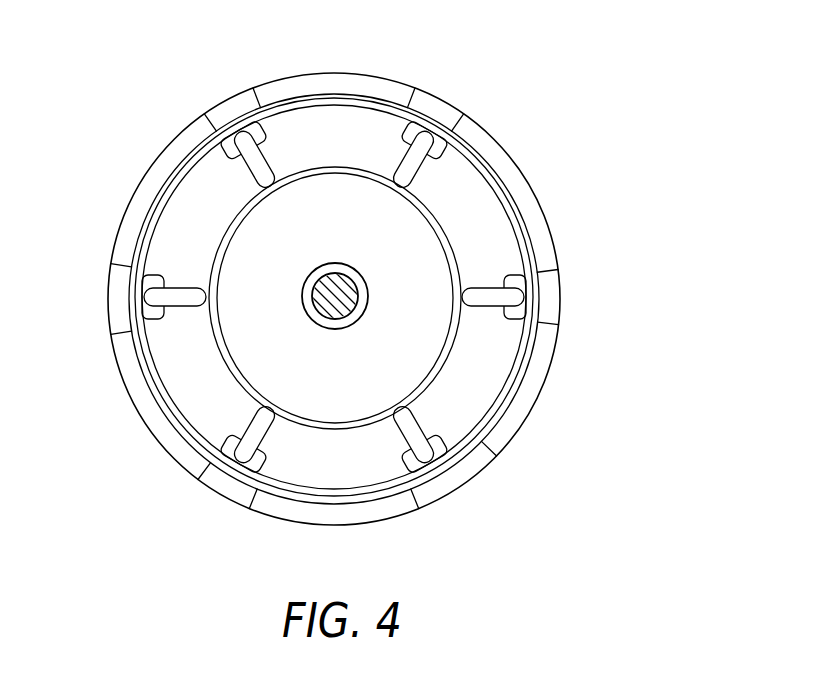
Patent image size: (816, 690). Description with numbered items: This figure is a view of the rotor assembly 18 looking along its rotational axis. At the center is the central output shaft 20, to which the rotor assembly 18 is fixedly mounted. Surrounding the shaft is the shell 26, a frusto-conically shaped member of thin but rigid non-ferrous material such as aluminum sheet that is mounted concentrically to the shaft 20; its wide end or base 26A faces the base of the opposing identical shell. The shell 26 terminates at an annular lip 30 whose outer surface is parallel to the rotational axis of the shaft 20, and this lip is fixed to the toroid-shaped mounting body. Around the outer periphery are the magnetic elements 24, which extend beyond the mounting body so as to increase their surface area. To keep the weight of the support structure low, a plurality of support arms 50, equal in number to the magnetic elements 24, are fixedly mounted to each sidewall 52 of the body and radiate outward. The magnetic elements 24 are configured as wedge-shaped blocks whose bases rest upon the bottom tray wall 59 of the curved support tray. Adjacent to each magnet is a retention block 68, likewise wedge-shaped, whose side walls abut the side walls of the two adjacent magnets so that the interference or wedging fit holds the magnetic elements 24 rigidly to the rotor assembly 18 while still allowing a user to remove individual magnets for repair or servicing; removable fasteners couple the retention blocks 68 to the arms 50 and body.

The rotor assembly 18 is at (600, 111).
The magnetic elements 24 is at (333, 82).
The retention block 68 is at (232, 103).
The support arms 50 is at (412, 157).
The sidewall 52 is at (298, 163).
The annular lip 30 is at (373, 420).
The shell 26 is at (275, 340).
The base 26A is at (352, 268).
The central output shaft 20 is at (352, 297).
The bottom tray wall 59 is at (487, 447).